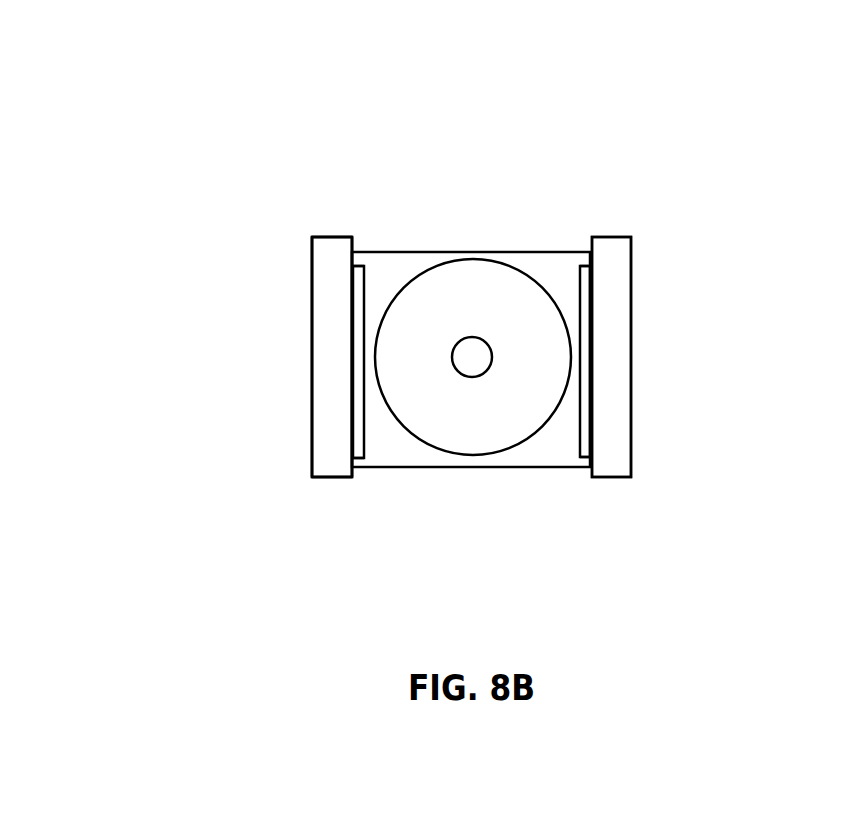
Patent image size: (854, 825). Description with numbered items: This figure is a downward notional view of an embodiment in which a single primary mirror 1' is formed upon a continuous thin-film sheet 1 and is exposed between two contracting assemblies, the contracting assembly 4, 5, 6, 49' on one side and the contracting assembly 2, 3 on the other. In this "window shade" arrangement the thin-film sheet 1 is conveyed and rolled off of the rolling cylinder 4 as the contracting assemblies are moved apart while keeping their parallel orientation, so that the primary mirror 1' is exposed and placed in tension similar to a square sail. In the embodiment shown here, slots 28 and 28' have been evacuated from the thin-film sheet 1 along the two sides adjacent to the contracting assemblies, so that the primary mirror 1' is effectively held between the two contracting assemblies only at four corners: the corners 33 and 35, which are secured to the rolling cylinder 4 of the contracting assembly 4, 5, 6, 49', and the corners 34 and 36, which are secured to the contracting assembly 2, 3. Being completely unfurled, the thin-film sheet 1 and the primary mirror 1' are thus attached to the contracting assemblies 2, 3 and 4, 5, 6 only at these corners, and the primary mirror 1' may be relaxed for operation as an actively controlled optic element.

The thin-film sheet 1 is at (471, 291).
The primary mirror 1' is at (473, 275).
The contracting assembly 2 is at (613, 290).
The contracting assembly 3 is at (664, 326).
The rolling cylinder 4 is at (330, 295).
The contracting assembly 5 is at (117, 229).
The contracting assembly 6 is at (146, 229).
The contracting assembly 49' is at (249, 340).
The slot 28 is at (403, 404).
The slot 28' is at (535, 404).
The corner 33 is at (357, 460).
The corner 34 is at (588, 460).
The corner 35 is at (360, 257).
The corner 36 is at (587, 262).